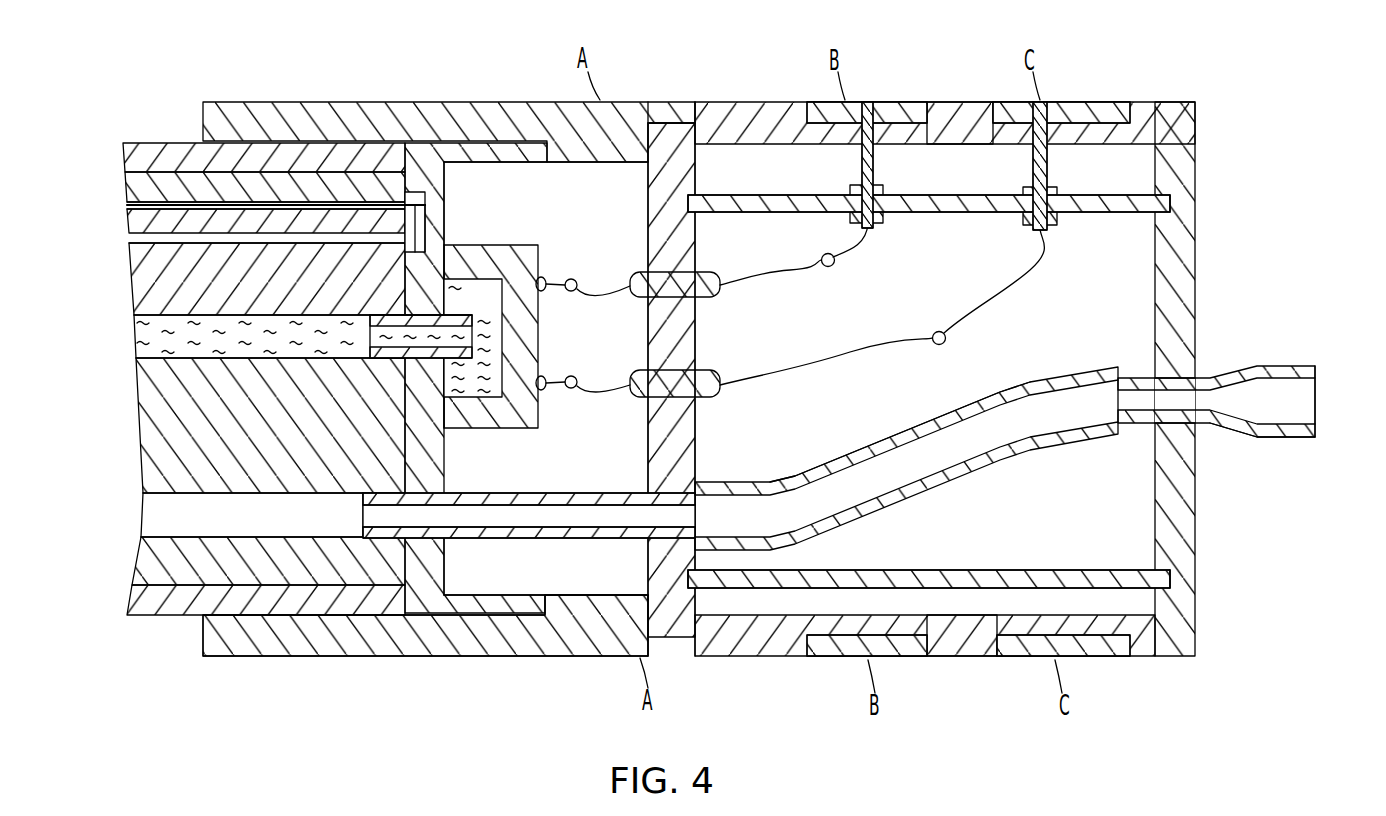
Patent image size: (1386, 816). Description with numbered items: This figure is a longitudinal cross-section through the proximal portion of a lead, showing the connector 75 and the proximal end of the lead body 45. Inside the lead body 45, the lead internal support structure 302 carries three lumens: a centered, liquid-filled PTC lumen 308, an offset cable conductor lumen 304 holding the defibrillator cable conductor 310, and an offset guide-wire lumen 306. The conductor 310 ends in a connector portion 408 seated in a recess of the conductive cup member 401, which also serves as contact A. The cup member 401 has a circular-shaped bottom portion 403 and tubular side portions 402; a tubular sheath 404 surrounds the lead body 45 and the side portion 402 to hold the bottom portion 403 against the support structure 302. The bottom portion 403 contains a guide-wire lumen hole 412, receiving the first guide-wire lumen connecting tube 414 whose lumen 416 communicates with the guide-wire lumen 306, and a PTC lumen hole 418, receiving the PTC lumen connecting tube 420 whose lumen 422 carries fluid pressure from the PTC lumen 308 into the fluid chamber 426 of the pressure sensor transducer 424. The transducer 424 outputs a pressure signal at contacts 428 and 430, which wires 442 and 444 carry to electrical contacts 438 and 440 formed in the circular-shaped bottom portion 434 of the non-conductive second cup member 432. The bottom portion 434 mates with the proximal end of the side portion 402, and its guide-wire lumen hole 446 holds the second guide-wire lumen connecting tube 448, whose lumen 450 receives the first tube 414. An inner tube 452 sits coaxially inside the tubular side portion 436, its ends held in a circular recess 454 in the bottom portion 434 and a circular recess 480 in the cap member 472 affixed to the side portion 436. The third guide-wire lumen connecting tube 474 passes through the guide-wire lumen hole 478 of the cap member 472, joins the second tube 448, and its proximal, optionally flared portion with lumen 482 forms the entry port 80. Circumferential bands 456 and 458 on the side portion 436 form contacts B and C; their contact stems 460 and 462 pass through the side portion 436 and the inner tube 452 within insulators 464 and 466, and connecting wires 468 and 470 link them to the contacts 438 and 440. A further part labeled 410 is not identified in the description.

The lead body 45 is at (126, 152).
The connector 75 is at (468, 700).
The guide-wire lumen entry port 80 is at (1280, 360).
The lead internal support structure 302 is at (128, 182).
The defibrillator electrode conductor lumen 304 is at (128, 206).
The guide-wire lumen 306 is at (143, 514).
The PTC lumen 308 is at (135, 335).
The defibrillator cable conductor 310 is at (128, 222).
The conductive cup member 401 is at (682, 99).
The tubular side portion 402 is at (625, 101).
The circular-shaped bottom portion 403 is at (446, 170).
The tubular sheath 404 is at (360, 657).
The connector portion 408 is at (428, 203).
The piston body 410 is at (440, 248).
The guide-wire lumen hole 412 is at (448, 490).
The first guide-wire lumen connecting tube 414 is at (580, 492).
The lumen 416 is at (518, 518).
The PTC lumen hole 418 is at (393, 372).
The PTC lumen connecting tube 420 is at (383, 318).
The lumen 422 is at (372, 337).
The pressure sensor transducer 424 is at (503, 275).
The fluid chamber 426 is at (489, 311).
The contact 428 is at (544, 277).
The contact 430 is at (546, 390).
The second cup member 432 is at (778, 662).
The circular-shaped bottom portion 434 is at (660, 452).
The tubular side portion 436 is at (945, 102).
The electrical contact 438 is at (703, 275).
The electrical contact 440 is at (703, 372).
The wire 442 is at (578, 280).
The wire 444 is at (578, 376).
The guide-wire lumen hole 446 is at (702, 485).
The second guide-wire lumen connecting tube 448 is at (897, 436).
The lumen 450 is at (1033, 440).
The inner tube 452 is at (973, 197).
The circular recess 454 is at (688, 204).
The circumferential band 456 is at (880, 102).
The circumferential band 458 is at (1070, 102).
The contact stem 460 is at (874, 170).
The contact stem 462 is at (1048, 172).
The insulator 464 is at (876, 230).
The insulator 466 is at (1050, 230).
The connecting wire 468 is at (830, 268).
The connecting wire 470 is at (942, 347).
The cap member 472 is at (1196, 262).
The third guide-wire lumen connecting tube 474 is at (1266, 438).
The guide-wire lumen hole 478 is at (1197, 375).
The circular recess 480 is at (1172, 204).
The lumen 482 is at (1310, 398).